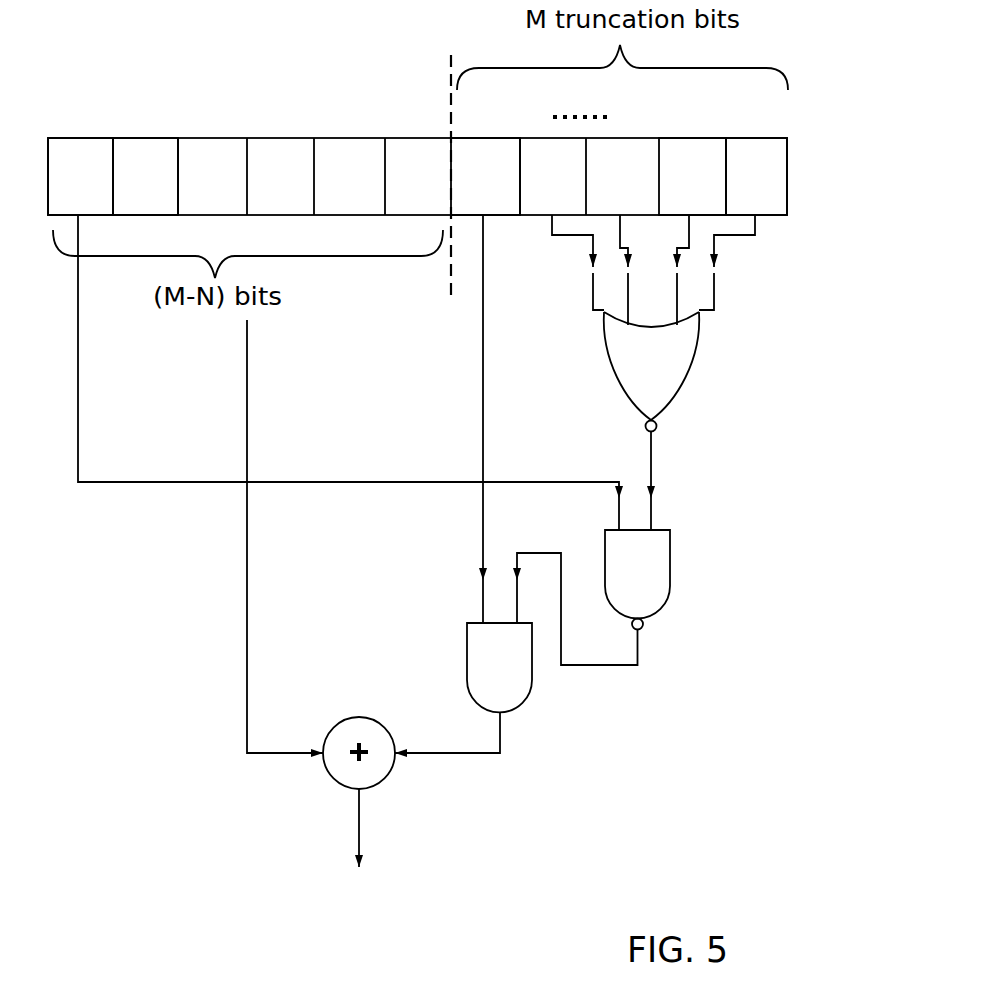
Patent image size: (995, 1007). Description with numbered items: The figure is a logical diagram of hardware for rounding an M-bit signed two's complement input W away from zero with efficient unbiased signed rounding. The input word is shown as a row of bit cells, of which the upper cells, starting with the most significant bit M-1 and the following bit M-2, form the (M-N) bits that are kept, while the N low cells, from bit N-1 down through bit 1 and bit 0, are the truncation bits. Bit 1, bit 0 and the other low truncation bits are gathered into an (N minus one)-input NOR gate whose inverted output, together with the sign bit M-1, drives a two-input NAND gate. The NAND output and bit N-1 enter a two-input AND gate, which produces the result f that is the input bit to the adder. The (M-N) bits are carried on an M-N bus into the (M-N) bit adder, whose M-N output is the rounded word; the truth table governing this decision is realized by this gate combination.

The most significant bit position W^ M-1 is at (80, 158).
The bit position M-2 of the signed input M-2 is at (145, 158).
The bit position W^ N-1 is at (485, 158).
The bit 1 of the truncated bits 1 is at (692, 158).
The bit 0 of the truncated bits 0 is at (758, 158).
The (M-N) bit adder bus M-N is at (268, 557).